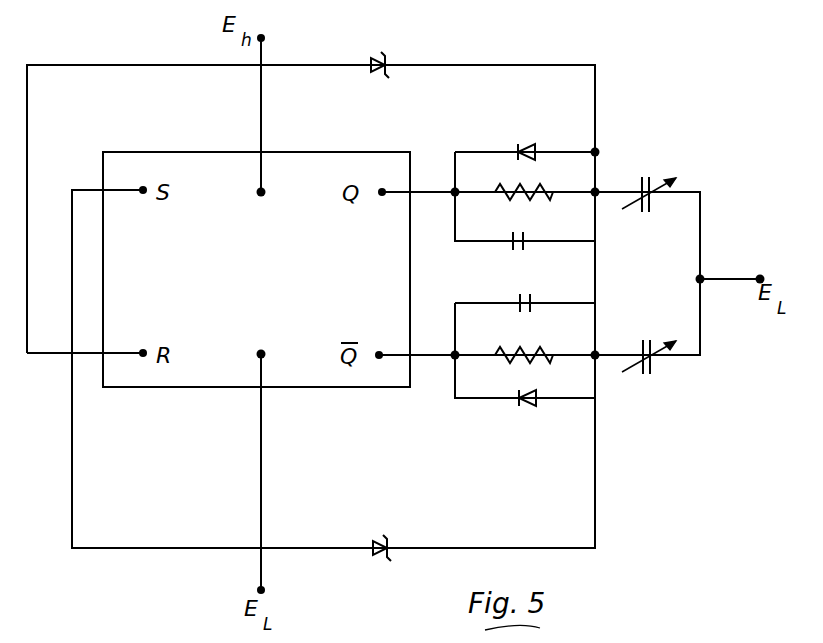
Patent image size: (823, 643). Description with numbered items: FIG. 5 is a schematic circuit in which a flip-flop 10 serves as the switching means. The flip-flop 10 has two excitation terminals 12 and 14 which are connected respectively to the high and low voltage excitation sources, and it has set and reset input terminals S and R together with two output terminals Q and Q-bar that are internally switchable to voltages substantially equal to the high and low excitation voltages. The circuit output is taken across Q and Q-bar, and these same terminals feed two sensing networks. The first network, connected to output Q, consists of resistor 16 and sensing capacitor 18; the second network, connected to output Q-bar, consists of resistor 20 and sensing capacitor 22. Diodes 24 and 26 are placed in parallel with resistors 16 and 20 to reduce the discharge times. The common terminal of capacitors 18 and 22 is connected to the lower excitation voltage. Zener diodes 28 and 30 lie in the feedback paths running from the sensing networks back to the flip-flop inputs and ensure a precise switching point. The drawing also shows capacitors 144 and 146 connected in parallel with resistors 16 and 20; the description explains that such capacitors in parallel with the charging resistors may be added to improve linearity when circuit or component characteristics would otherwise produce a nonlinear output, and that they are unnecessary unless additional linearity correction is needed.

The flip-flop 10 is at (330, 391).
The excitation terminal 12 is at (266, 196).
The excitation terminal 14 is at (266, 347).
The resistor 16 is at (528, 197).
The sensing capacitor 18 is at (645, 177).
The resistor 20 is at (512, 352).
The sensing capacitor 22 is at (646, 343).
The diode 24 is at (522, 143).
The diode 26 is at (527, 409).
The Zener diode 28 is at (392, 58).
The Zener diode 30 is at (392, 540).
The capacitor 144 is at (527, 247).
The capacitor 146 is at (517, 298).